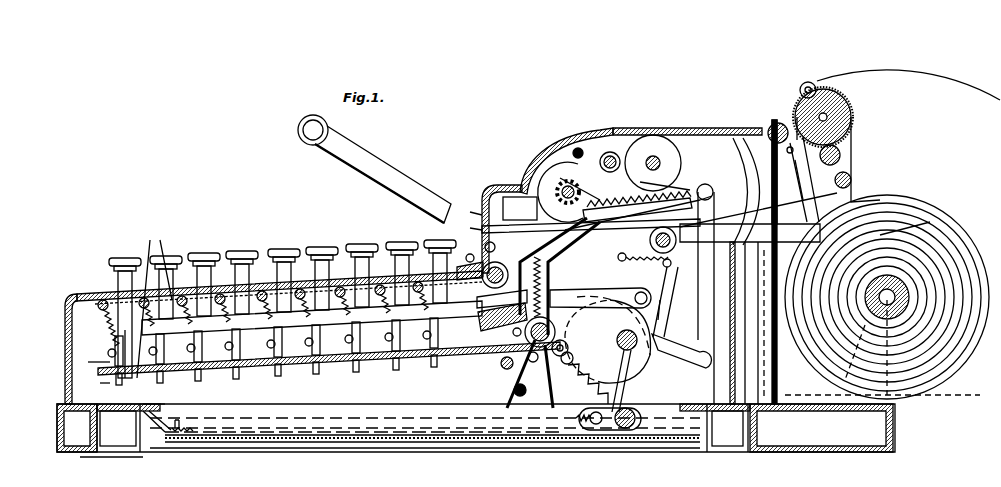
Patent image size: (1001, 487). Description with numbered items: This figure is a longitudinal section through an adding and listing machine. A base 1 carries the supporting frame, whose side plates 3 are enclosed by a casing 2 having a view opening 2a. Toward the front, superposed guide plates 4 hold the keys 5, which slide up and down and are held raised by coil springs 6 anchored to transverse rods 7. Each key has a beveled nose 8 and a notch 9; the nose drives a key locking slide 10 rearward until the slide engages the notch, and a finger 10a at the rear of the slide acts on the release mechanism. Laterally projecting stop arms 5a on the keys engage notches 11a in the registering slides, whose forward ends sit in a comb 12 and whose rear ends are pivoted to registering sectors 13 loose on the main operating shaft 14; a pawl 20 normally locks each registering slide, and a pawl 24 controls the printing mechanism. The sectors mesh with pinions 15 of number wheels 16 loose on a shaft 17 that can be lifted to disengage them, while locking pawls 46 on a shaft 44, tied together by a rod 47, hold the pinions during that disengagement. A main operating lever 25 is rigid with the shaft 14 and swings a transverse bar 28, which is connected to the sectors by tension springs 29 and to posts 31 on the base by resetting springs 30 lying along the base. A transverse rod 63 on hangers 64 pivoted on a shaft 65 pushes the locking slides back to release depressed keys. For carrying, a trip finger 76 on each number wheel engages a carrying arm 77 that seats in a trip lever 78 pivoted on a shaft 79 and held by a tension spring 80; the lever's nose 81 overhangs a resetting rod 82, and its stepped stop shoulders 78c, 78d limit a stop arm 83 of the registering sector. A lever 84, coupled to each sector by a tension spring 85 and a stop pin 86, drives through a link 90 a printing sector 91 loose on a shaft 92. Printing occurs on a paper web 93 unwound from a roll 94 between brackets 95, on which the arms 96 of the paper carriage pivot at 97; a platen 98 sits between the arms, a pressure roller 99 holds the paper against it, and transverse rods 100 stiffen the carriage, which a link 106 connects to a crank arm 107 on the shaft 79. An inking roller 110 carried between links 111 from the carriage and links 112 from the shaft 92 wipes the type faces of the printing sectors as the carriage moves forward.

The base 1 is at (62, 424).
The casing 2 is at (70, 380).
The view opening 2a is at (530, 155).
The side plates 3 is at (100, 349).
The guide plates 4 is at (66, 297).
The keys 5 is at (117, 283).
The stop arms 5a is at (148, 302).
The coil springs 6 is at (105, 325).
The rods 7 is at (97, 305).
The beveled nose 8 is at (100, 383).
The notch 9 is at (88, 362).
The key locking slide 10 is at (153, 405).
The finger 10a is at (518, 350).
The notches 11a is at (212, 335).
The comb 12 is at (130, 413).
The registering sectors 13 is at (600, 289).
The main operating shaft 14 is at (616, 416).
The pinions 15 is at (488, 190).
The number wheels 16 is at (527, 172).
The shaft 17 is at (566, 180).
The pawl 20 is at (500, 322).
The pawl 24 is at (585, 380).
The main operating lever 25 is at (362, 170).
The transverse bar 28 is at (624, 430).
The tension springs 29 is at (690, 380).
The resetting springs 30 is at (380, 430).
The posts 31 is at (190, 432).
The shaft 44 is at (597, 180).
The locking pawl 46 is at (584, 150).
The rod 47 is at (608, 156).
The transverse rod 63 is at (535, 330).
The hangers 64 is at (507, 370).
The shaft 65 is at (458, 268).
The trip finger 76 is at (625, 190).
The carrying arm 77 is at (645, 182).
The trip lever 78 is at (773, 128).
The stop shoulder 78c is at (925, 222).
The stop shoulder 78d is at (808, 200).
The shaft 79 is at (710, 190).
The tension spring 80 is at (478, 212).
The nose 81 is at (470, 228).
The resetting rod 82 is at (470, 254).
The stop arm 83 is at (665, 165).
The lever 84 is at (664, 310).
The tension spring 85 is at (658, 247).
The stop pin 86 is at (672, 280).
The link 90 is at (735, 335).
The printing sector 91 is at (748, 180).
The shaft 92 is at (565, 230).
The web 93 is at (925, 232).
The roll 94 is at (902, 285).
The brackets 95 is at (893, 398).
The arms 96 is at (853, 136).
The pivot 97 is at (922, 396).
The platen 98 is at (850, 113).
The pressure roller 99 is at (840, 157).
The transverse rods 100 is at (814, 87).
The link 106 is at (805, 205).
The crank arm 107 is at (840, 105).
The inking roller 110 is at (778, 123).
The links 111 is at (798, 168).
The links 112 is at (790, 147).